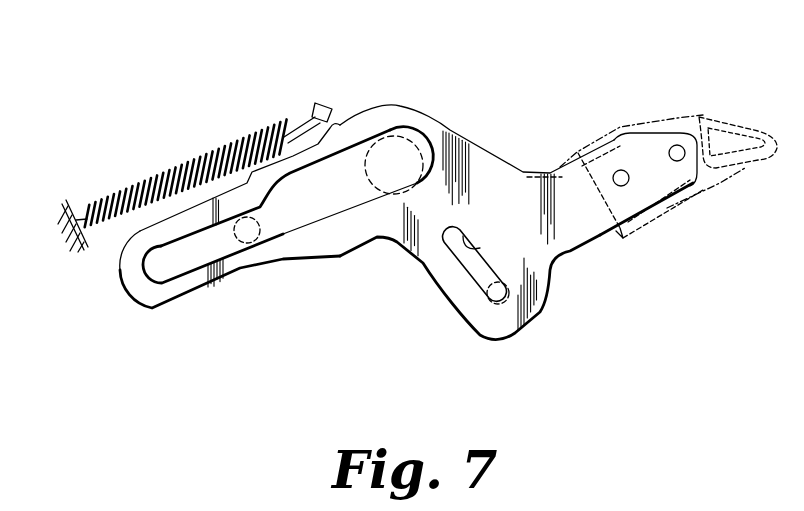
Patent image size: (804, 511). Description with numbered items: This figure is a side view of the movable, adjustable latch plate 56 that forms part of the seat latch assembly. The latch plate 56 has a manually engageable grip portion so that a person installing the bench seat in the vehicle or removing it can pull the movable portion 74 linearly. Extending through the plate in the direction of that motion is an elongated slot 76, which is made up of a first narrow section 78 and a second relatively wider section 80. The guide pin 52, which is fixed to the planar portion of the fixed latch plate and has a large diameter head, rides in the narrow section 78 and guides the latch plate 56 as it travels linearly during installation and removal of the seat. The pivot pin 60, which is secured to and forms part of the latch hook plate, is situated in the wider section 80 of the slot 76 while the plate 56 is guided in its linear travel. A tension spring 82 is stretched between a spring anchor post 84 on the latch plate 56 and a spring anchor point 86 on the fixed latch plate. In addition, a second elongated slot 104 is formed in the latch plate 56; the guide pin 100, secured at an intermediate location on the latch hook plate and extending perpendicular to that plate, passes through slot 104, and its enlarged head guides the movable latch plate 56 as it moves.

The guide pin 52 is at (247, 243).
The second latch plate 56 is at (397, 227).
The pivot pin 60 is at (407, 153).
The movable portion 74 is at (668, 218).
The elongated slot 76 is at (300, 195).
The first narrow section 78 is at (173, 247).
The second relatively wider section 80 is at (357, 206).
The tension spring 82 is at (211, 148).
The spring anchor post 84 is at (340, 122).
The spring anchor point 86 is at (68, 203).
The guide pin 100 is at (503, 306).
The elongated slot 104 is at (455, 236).